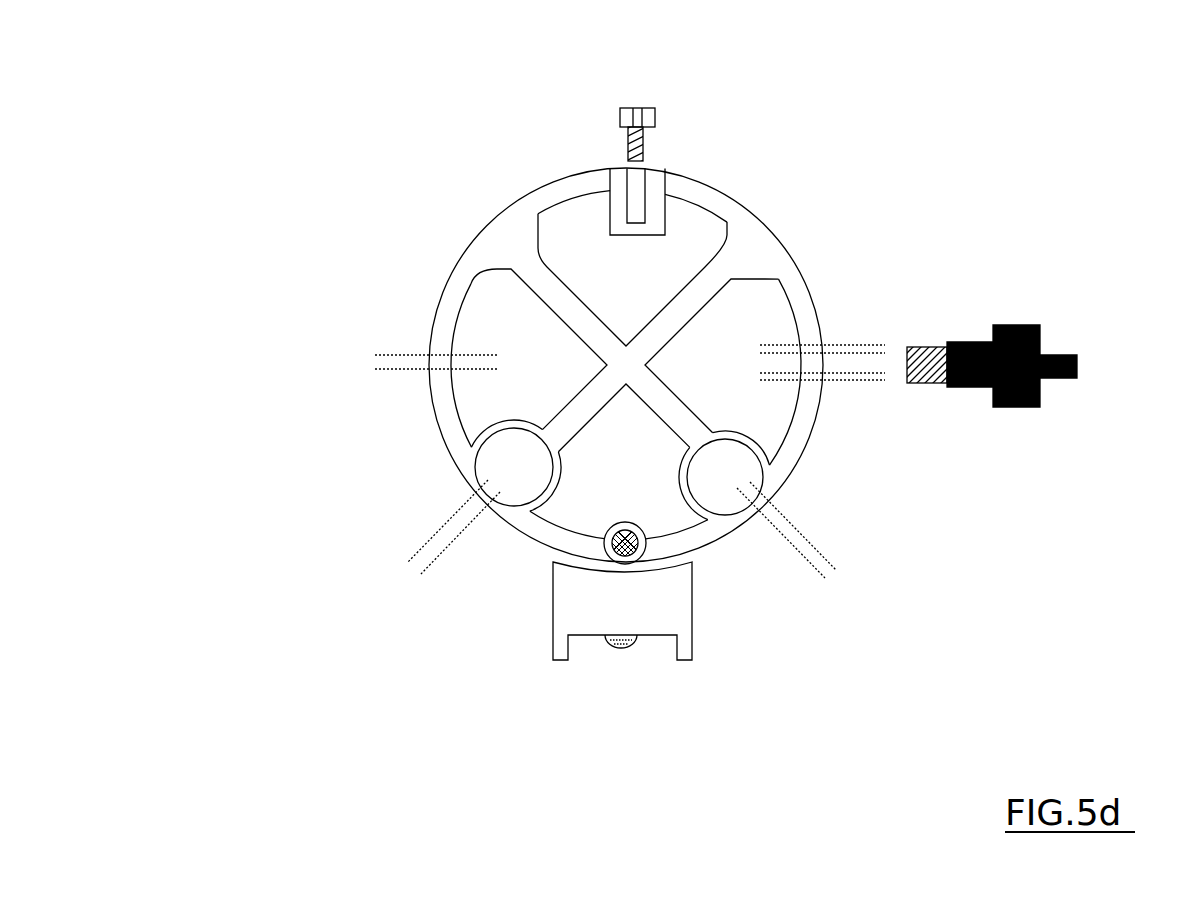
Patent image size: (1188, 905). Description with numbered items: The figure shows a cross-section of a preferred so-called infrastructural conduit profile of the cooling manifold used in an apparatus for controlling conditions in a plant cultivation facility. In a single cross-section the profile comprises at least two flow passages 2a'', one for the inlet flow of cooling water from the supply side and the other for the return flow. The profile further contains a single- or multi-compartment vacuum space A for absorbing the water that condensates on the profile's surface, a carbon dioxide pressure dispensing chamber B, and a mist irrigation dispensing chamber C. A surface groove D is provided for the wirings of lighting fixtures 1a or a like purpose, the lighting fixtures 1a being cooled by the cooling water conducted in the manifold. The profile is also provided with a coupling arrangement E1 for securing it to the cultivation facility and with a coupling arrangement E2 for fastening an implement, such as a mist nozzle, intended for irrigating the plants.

The flow passages 2a'' is at (512, 396).
The coupling arrangement E1 is at (667, 163).
The coupling arrangement E2 is at (860, 385).
The vacuum space A is at (489, 470).
The carbon dioxide pressure dispensing chamber B is at (489, 393).
The mist irrigation dispensing chamber C is at (757, 318).
The surface groove D is at (605, 551).
The lighting fixture 1a is at (701, 616).